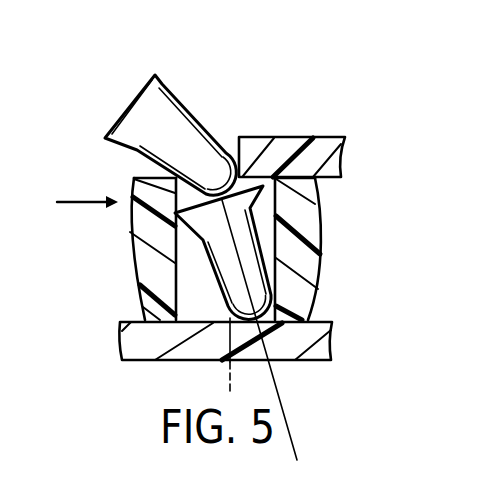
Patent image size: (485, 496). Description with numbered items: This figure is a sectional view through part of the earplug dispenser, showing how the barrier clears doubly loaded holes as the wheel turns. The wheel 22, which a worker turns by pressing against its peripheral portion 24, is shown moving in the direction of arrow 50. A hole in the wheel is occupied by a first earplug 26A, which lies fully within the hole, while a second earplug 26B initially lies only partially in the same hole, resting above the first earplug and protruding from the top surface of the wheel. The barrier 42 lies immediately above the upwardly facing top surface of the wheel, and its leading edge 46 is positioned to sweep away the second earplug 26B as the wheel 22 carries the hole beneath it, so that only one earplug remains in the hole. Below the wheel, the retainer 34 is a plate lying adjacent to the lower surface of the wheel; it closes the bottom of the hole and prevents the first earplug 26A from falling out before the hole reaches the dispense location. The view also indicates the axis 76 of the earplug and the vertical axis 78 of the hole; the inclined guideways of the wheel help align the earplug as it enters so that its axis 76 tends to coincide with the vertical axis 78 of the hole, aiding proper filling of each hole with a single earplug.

The wheel 22 is at (123, 246).
The peripheral portion 24 is at (178, 277).
The first earplug 26A is at (265, 222).
The second earplug 26B is at (156, 76).
The retainer 34 is at (335, 340).
The barrier 42 is at (344, 140).
The leading edge 46 is at (229, 148).
The arrow 50 is at (73, 202).
The axis of the earplug 76 is at (275, 380).
The vertical axis of the hole 78 is at (228, 372).